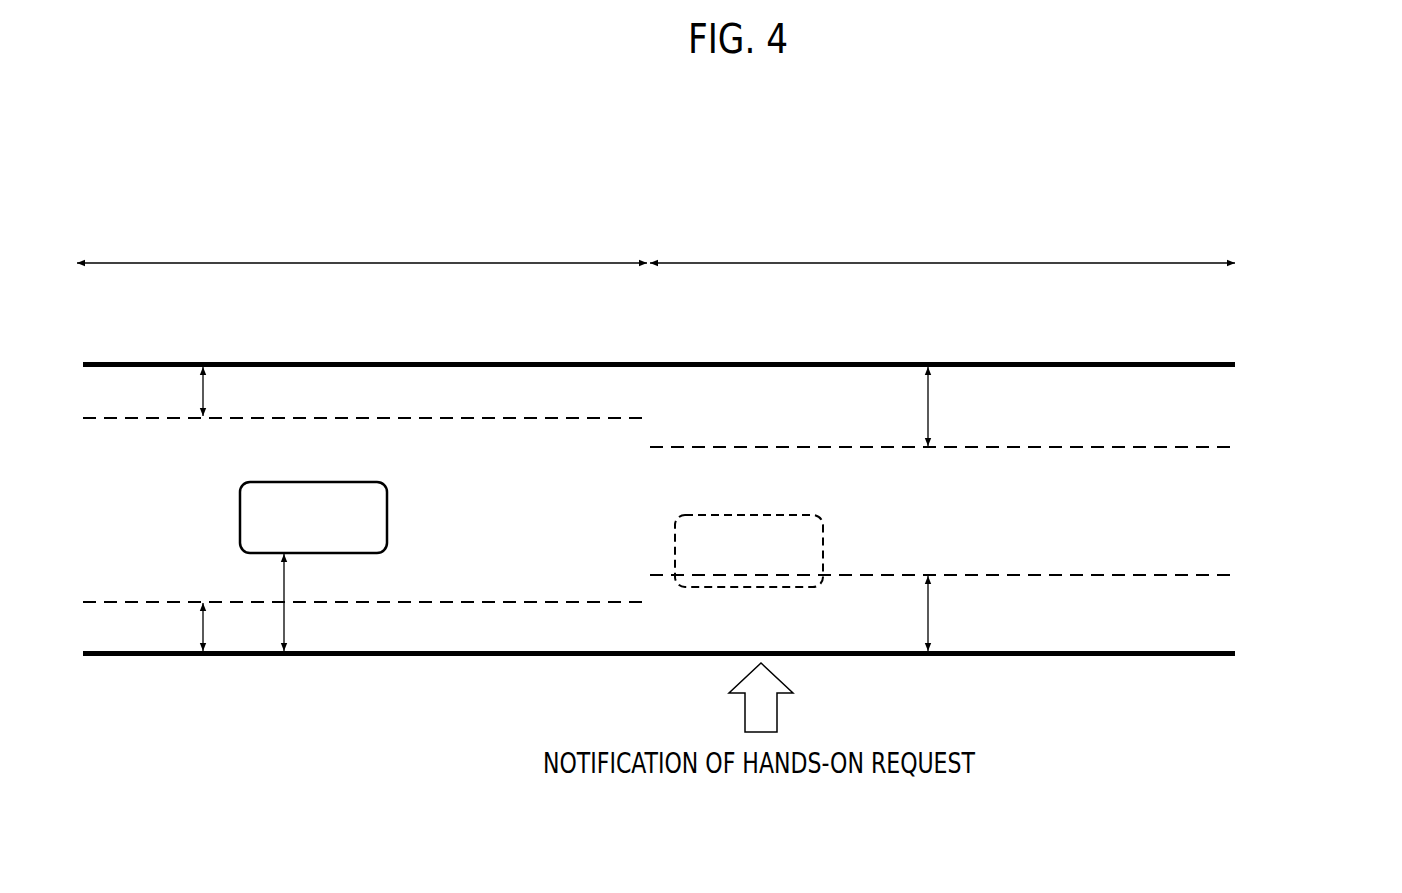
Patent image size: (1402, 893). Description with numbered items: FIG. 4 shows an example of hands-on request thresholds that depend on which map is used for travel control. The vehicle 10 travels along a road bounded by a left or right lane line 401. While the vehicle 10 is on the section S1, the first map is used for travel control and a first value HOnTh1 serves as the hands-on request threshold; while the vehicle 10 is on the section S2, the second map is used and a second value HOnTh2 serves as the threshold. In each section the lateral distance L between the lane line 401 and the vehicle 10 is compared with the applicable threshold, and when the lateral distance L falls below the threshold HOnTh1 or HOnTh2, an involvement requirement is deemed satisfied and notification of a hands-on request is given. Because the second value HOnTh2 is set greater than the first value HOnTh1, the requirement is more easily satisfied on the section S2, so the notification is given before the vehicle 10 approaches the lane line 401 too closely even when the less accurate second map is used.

The vehicle 10 is at (354, 553).
The lane line 401 is at (1190, 368).
The section S1 is at (362, 239).
The section S2 is at (942, 239).
The first value HOnTh1 is at (150, 509).
The second value HOnTh2 is at (985, 509).
The lateral distance L is at (268, 602).